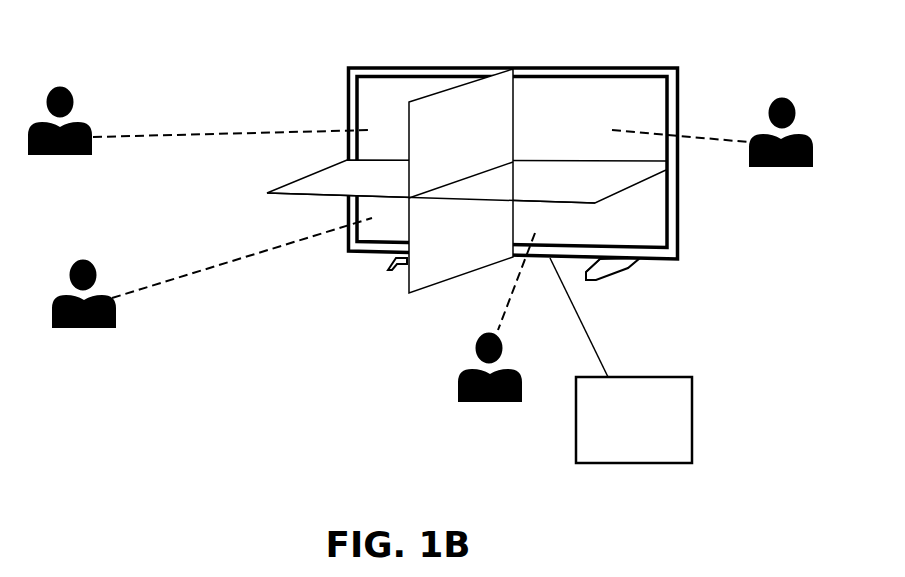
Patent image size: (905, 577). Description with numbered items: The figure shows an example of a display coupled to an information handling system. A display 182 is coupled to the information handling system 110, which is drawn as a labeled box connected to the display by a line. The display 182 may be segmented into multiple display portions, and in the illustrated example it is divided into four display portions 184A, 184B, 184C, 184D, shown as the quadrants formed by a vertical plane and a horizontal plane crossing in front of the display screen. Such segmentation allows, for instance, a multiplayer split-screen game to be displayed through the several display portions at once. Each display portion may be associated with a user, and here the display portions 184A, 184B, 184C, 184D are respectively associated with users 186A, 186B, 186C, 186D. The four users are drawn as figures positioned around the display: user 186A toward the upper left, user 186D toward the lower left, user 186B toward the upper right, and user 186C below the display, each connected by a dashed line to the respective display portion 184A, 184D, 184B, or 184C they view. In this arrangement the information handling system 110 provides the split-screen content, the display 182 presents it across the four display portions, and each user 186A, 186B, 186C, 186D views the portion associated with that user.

The information handling system 110 is at (616, 446).
The display 182 is at (633, 66).
The display portion 184A is at (385, 103).
The display portion 184B is at (595, 103).
The display portion 184C is at (630, 217).
The display portion 184D is at (383, 229).
The user 186A is at (67, 86).
The user 186B is at (788, 98).
The user 186C is at (462, 375).
The user 186D is at (90, 260).